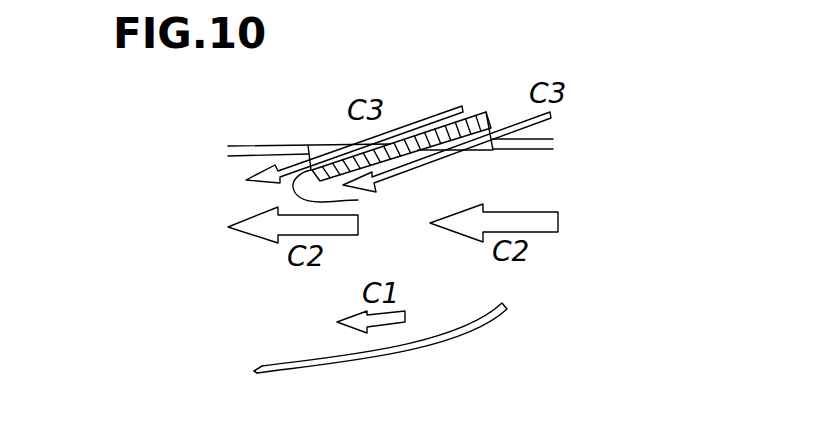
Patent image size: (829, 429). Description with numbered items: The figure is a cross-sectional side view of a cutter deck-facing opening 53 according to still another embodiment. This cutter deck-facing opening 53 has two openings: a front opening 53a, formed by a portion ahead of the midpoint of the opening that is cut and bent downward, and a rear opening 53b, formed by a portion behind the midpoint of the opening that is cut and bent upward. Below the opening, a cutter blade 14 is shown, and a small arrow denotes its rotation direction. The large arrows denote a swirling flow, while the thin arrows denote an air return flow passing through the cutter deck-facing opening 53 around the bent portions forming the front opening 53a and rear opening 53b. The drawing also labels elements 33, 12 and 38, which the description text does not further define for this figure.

The cutter deck-facing opening 53 is at (403, 120).
The front opening 53a is at (358, 200).
The rear opening 53b is at (489, 112).
The frame member 33 is at (541, 133).
The opening 12 is at (496, 285).
The cutter blade 14 is at (477, 330).
The panel edge 38 is at (257, 368).